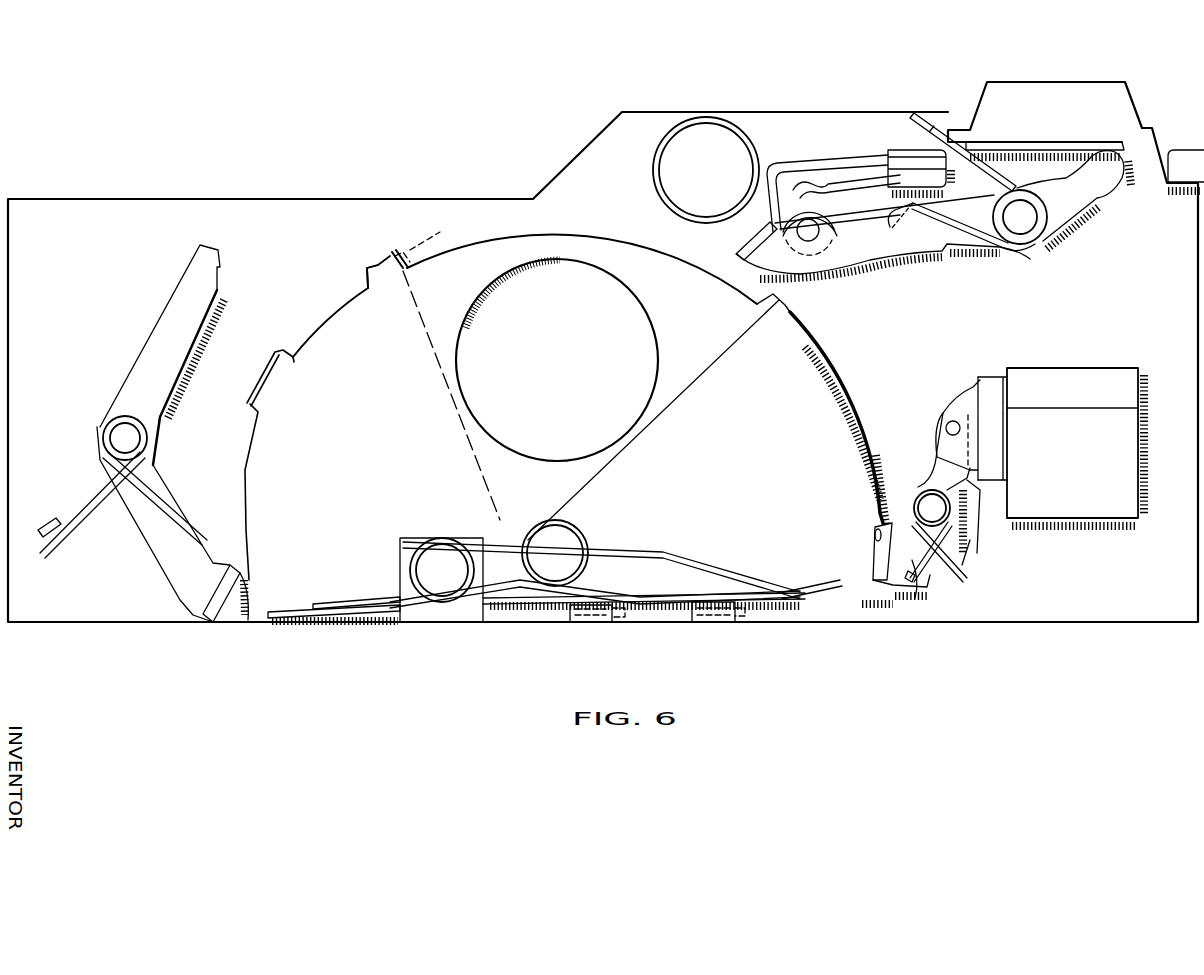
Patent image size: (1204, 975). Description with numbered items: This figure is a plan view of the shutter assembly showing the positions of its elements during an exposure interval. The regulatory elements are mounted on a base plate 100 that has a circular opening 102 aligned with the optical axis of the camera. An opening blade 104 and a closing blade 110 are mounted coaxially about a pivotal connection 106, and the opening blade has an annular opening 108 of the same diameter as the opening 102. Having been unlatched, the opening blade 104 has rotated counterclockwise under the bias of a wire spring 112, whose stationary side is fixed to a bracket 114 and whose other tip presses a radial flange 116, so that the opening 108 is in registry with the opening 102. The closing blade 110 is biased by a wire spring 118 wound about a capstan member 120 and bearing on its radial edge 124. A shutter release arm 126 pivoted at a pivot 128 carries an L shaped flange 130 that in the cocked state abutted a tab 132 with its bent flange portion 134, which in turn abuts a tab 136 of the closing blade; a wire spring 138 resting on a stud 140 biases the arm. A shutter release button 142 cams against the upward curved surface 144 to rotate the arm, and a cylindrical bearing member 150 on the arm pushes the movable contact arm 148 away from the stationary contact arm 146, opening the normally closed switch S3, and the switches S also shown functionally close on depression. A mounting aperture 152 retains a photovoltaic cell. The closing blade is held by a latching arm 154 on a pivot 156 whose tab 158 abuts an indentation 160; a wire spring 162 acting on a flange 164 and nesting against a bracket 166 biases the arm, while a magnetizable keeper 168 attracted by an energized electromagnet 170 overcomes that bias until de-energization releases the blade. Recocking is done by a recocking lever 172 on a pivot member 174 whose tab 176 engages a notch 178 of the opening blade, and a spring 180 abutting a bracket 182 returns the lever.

The base plate 100 is at (215, 199).
The circular opening 102 is at (657, 358).
The opening blade 104 is at (243, 458).
The pivotal connection 106 is at (542, 582).
The annular opening 108 is at (465, 322).
The closing blade 110 is at (815, 362).
The wire spring 112 is at (340, 606).
The bracket 114 is at (720, 606).
The radial flange 116 is at (283, 620).
The wire spring 118 is at (572, 615).
The capstan member 120 is at (443, 580).
The radial edge 124 is at (828, 600).
The shutter release arm 126 is at (937, 262).
The pivot 128 is at (1025, 230).
The L shaped flange 130 is at (760, 224).
The tab 132 is at (382, 265).
The outwardly bent flange portion 134 is at (393, 252).
The tab 136 is at (782, 310).
The wire spring 138 is at (1010, 258).
The stud 140 is at (925, 112).
The shutter release button 142 is at (1050, 82).
The upward curved surface 144 is at (1100, 196).
The stationary contact arm 146 is at (834, 182).
The movable contact arm 148 is at (790, 163).
The cylindrical bearing member 150 is at (820, 236).
The mounting aperture 152 is at (718, 127).
The latching arm 154 is at (972, 505).
The pivot 156 is at (930, 500).
The tab 158 is at (888, 600).
The indentation 160 is at (880, 525).
The wire spring 162 is at (948, 548).
The flange 164 is at (920, 600).
The bracket 166 is at (940, 578).
The magnetizable keeper 168 is at (963, 395).
The electromagnet 170 is at (1078, 370).
The recocking lever 172 is at (165, 318).
The pivot member 174 is at (118, 437).
The tab 176 is at (222, 623).
The notch 178 is at (250, 584).
The spring 180 is at (100, 494).
The bracket 182 is at (55, 525).
The switch S3 is at (905, 150).
The switch S is at (1178, 150).